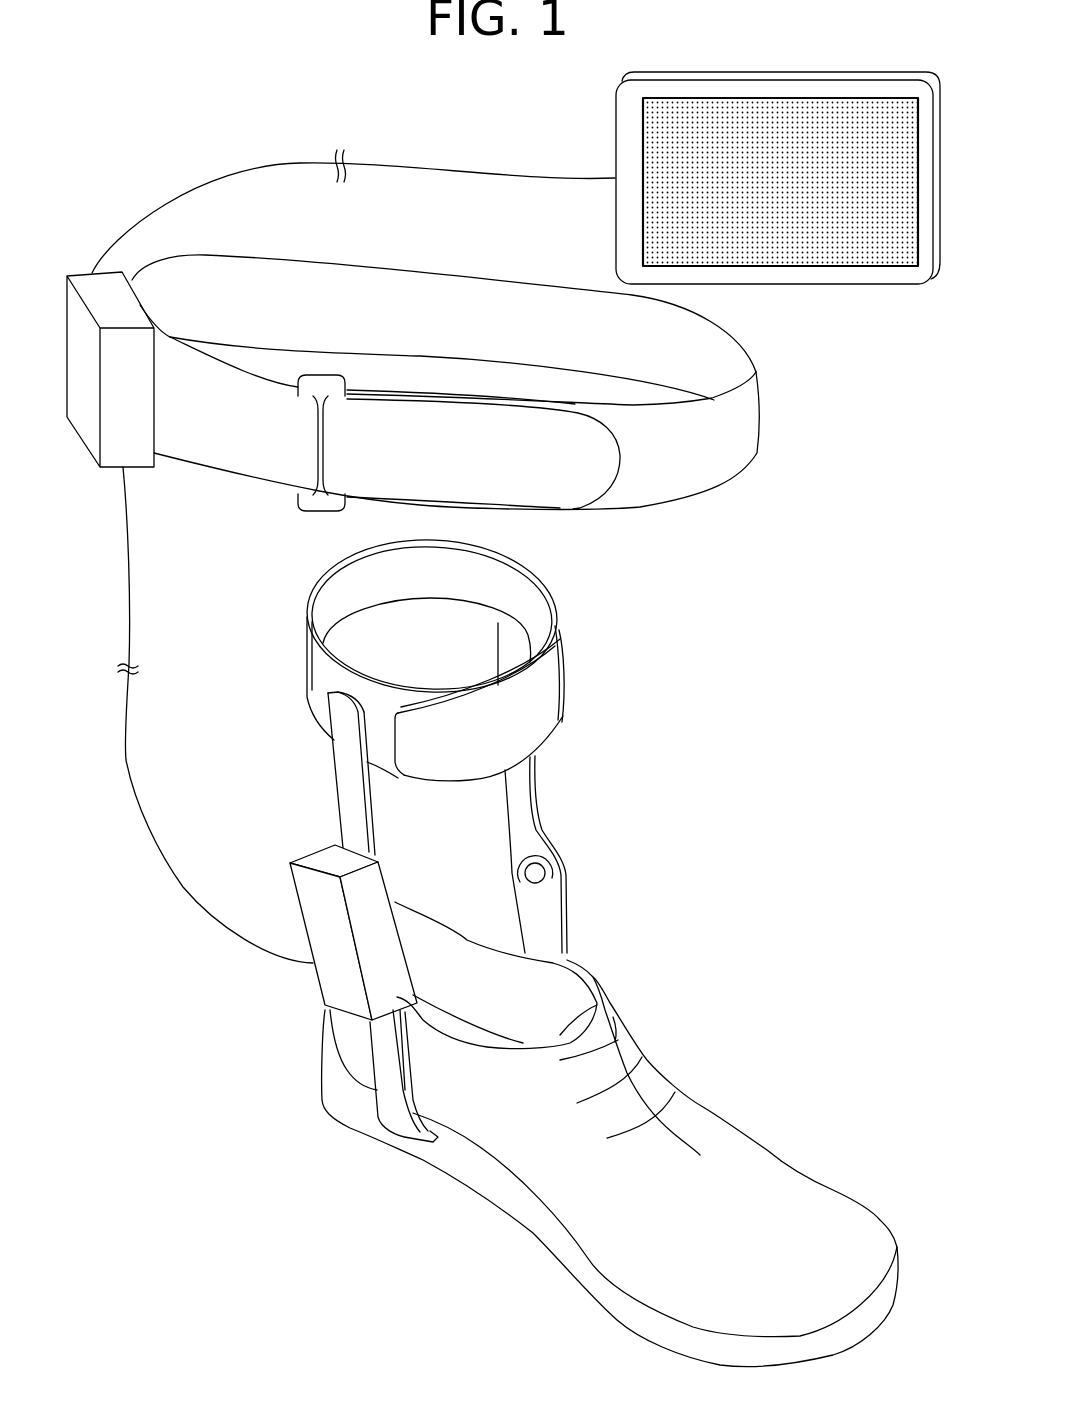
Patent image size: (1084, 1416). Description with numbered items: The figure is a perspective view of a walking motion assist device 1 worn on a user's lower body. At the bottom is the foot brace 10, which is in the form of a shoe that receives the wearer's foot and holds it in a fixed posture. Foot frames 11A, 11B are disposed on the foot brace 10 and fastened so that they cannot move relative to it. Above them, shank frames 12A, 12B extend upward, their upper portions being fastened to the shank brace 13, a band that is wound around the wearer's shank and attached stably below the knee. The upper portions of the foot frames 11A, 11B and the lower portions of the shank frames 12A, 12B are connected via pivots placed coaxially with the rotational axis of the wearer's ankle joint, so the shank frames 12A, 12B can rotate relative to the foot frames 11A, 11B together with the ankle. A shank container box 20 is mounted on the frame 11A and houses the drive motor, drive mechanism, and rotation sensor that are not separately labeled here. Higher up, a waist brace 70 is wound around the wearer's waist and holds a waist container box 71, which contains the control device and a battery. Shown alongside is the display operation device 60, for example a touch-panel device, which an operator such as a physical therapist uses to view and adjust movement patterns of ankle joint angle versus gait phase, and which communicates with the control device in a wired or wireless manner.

The walking motion assist device 1 is at (692, 650).
The foot brace 10 is at (705, 1107).
The foot frame 11A is at (370, 1063).
The foot frame 11B is at (564, 908).
The shank frame 12A is at (329, 786).
The shank frame 12B is at (540, 803).
The shank brace 13 is at (304, 650).
The shank container box 20 is at (291, 860).
The display operation device 60 is at (905, 287).
The waist brace 70 is at (762, 428).
The waist container box 71 is at (78, 437).